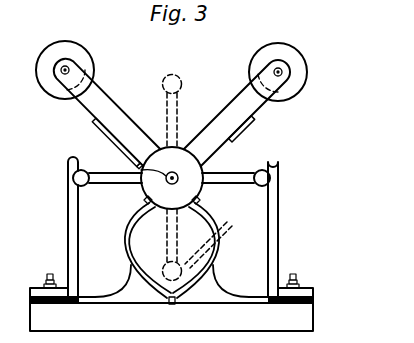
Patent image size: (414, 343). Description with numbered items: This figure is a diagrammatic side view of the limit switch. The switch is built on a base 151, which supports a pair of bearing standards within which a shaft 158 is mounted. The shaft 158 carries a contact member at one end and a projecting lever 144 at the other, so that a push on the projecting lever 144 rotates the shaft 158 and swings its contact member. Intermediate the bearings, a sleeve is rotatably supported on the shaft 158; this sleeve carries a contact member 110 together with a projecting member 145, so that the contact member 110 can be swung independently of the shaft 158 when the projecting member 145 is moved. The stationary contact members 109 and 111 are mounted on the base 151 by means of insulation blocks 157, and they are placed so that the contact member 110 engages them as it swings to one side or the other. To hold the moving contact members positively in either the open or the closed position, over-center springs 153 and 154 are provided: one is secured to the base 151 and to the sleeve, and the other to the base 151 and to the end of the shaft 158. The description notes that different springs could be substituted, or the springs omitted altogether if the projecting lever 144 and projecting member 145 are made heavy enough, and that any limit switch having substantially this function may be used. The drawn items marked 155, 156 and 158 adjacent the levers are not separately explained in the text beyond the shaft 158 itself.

The contact member 109 is at (67, 249).
The contact member 110 is at (176, 80).
The contact member 111 is at (279, 205).
The projecting lever 144 is at (257, 115).
The projecting member 145 is at (97, 93).
The base 151 is at (305, 320).
The over-center spring 153 is at (220, 238).
The over-center spring 154 is at (125, 245).
The right contact strip 155 is at (237, 138).
The left contact strip 156 is at (104, 133).
The insulation block 157 is at (77, 299).
The shaft 158 is at (138, 167).